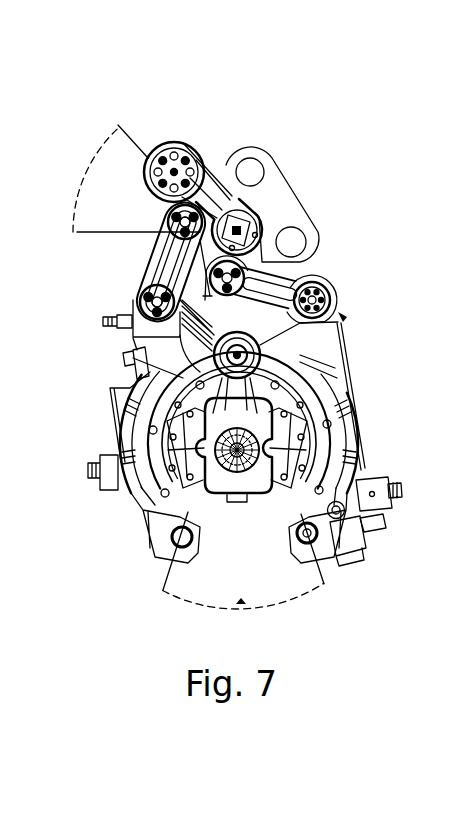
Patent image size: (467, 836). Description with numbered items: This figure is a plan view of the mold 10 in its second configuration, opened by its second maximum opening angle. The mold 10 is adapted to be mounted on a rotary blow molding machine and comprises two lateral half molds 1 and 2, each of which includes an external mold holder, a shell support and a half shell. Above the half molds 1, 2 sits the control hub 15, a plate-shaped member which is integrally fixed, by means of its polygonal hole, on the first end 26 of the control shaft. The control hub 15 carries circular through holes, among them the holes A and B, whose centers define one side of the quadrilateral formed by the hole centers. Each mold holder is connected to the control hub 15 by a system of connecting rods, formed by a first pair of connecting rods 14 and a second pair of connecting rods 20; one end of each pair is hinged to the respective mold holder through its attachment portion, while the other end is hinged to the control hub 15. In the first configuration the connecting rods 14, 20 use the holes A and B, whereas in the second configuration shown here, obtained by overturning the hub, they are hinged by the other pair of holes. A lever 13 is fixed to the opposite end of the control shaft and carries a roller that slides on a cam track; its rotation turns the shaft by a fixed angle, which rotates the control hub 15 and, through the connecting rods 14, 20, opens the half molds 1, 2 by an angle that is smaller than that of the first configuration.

The mold 10 is at (130, 82).
The lever 13 is at (203, 150).
The hole A is at (250, 170).
The control hub 15 is at (267, 200).
The first end of the control shaft 26 is at (241, 226).
The hole B is at (292, 243).
The second pair of connecting rods 20 is at (307, 279).
The first pair of connecting rods 14 is at (167, 273).
The lateral half mold 1 is at (118, 433).
The lateral half mold 2 is at (360, 417).